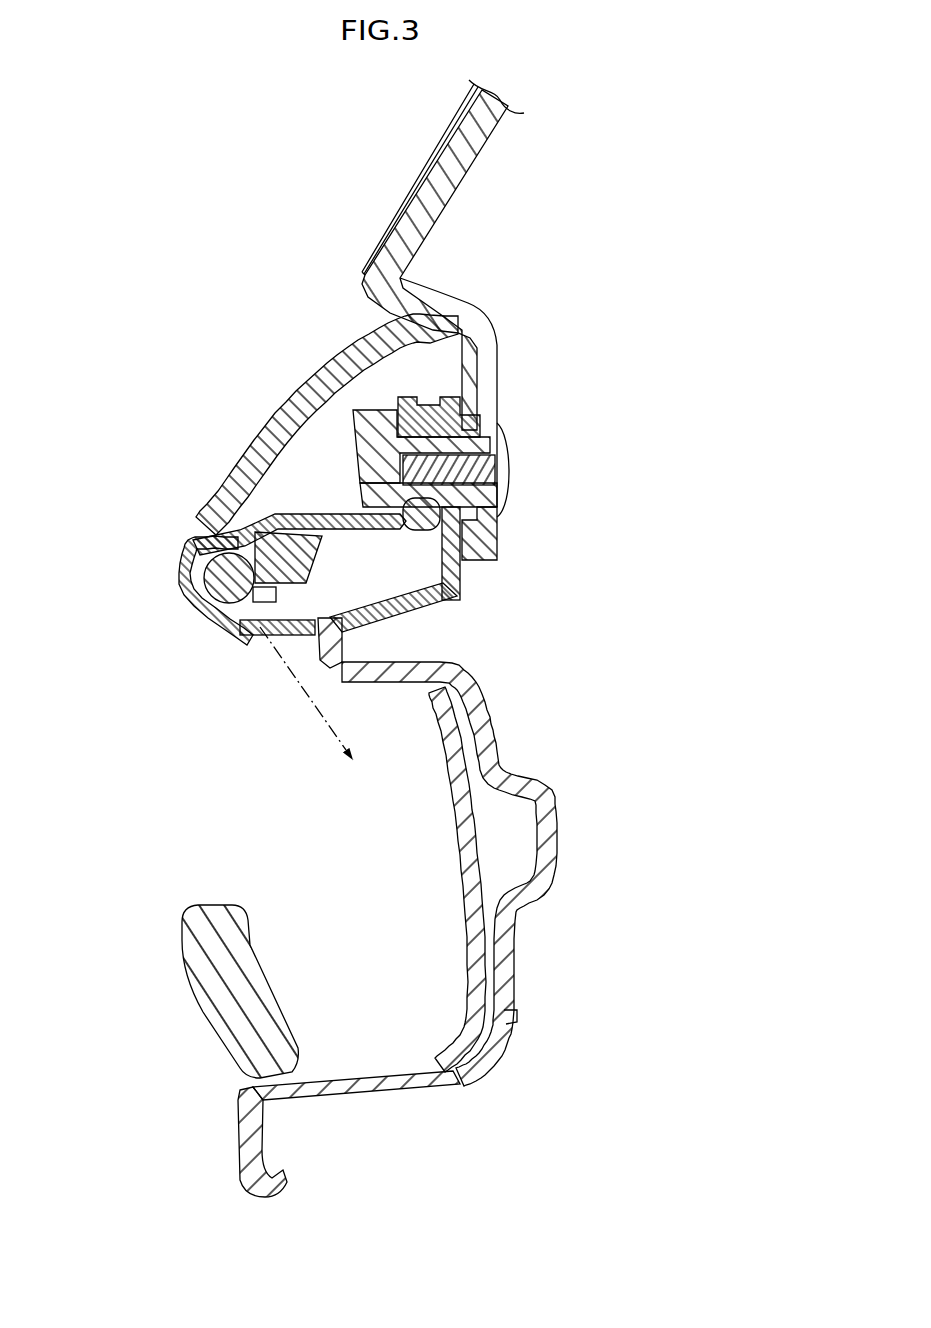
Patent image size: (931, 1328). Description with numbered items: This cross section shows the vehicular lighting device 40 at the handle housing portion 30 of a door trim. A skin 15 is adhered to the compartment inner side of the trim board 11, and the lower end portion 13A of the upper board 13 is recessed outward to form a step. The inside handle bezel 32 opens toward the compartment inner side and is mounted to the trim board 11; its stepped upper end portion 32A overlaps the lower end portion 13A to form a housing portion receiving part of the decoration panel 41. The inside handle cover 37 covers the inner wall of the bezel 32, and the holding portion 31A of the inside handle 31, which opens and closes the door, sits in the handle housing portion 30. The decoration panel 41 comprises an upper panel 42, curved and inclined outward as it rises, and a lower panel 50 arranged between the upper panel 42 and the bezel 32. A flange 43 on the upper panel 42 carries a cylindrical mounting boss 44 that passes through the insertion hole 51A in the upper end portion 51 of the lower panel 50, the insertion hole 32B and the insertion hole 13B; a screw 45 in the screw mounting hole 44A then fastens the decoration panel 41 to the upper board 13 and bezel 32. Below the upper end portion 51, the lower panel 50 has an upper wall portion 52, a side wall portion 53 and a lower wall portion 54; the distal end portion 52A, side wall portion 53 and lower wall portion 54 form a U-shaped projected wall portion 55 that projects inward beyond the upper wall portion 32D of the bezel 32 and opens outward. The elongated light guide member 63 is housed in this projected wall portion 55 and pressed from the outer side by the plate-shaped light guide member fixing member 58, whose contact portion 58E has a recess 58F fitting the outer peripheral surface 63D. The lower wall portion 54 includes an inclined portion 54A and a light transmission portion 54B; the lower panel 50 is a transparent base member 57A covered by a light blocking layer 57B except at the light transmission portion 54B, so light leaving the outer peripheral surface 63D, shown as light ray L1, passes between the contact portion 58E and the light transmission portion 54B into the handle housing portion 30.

The trim board 11 is at (547, 123).
The upper board 13 is at (483, 130).
The lower end portion of the upper board 13A is at (483, 358).
The insertion hole 13B is at (492, 495).
The skin 15 is at (418, 188).
The handle housing portion 30 is at (352, 1043).
The inside handle 31 is at (126, 1018).
The holding portion of the inside handle 31A is at (218, 993).
The inside handle bezel 32 is at (548, 822).
The upper end portion of the bezel 32A is at (458, 596).
The insertion hole 32B is at (477, 505).
The upper wall portion of the bezel 32D is at (403, 605).
The inside handle cover 37 is at (450, 733).
The vehicular lighting device 40 is at (233, 435).
The decoration panel 41 is at (195, 389).
The upper panel 42 is at (372, 345).
The flange 43 is at (367, 423).
The mounting boss 44 is at (480, 443).
The screw mounting hole 44A is at (457, 462).
The screw 45 is at (507, 447).
The lower panel 50 is at (295, 505).
The upper end portion of the lower panel 51 is at (411, 420).
The insertion hole 51A is at (438, 595).
The upper wall portion 52 is at (325, 423).
The distal end portion of the upper wall portion 52A is at (187, 543).
The side wall portion 53 is at (187, 577).
The lower wall portion 54 is at (190, 617).
The inclined portion 54A is at (207, 613).
The light transmission portion 54B is at (270, 635).
The projected wall portion 55 is at (58, 550).
The base member 57A is at (160, 788).
The light blocking layer 57B is at (248, 640).
The light guide member fixing member 58 is at (217, 502).
The contact portion 58E is at (342, 628).
The recess 58F is at (237, 637).
The light guide member 63 is at (230, 620).
The outer peripheral surface of the light guide member 63D is at (273, 593).
The light ray L1 is at (300, 695).